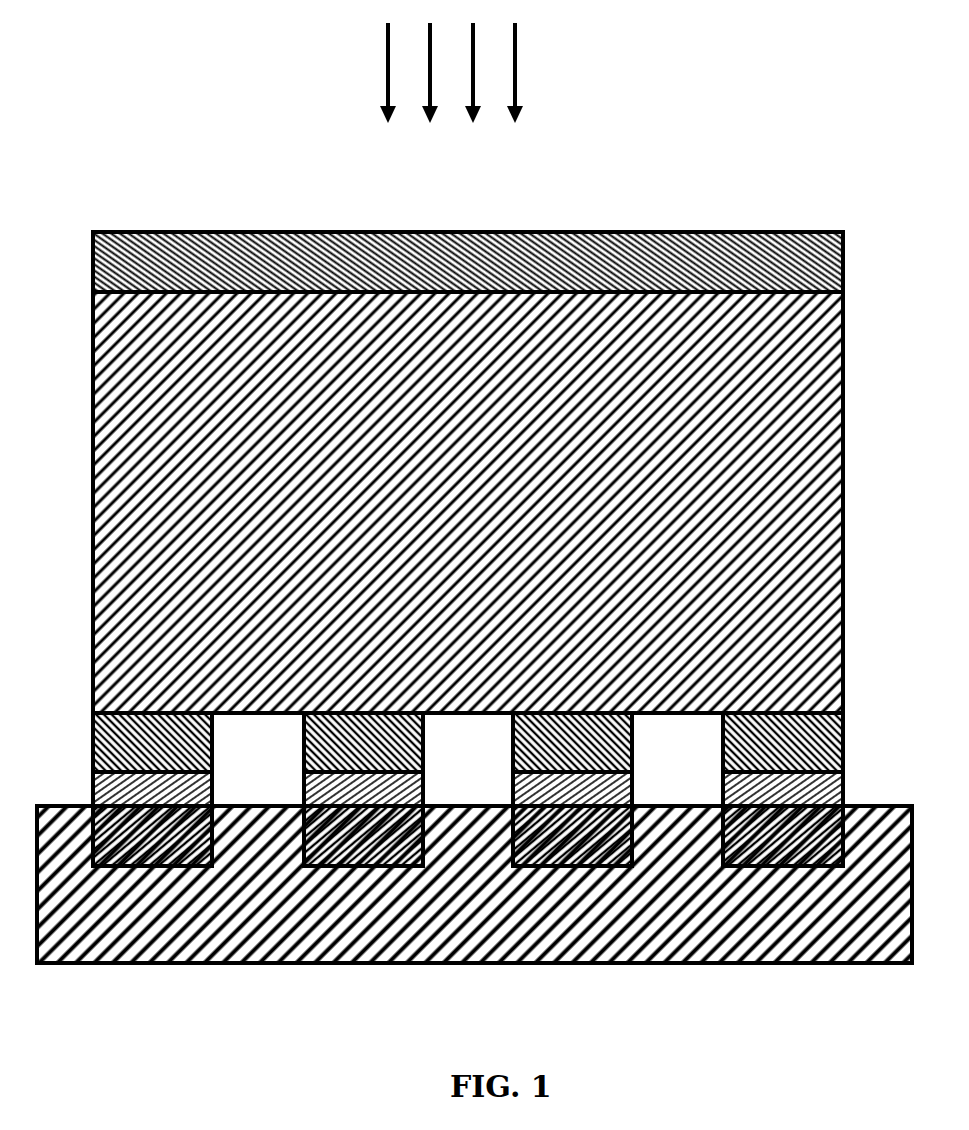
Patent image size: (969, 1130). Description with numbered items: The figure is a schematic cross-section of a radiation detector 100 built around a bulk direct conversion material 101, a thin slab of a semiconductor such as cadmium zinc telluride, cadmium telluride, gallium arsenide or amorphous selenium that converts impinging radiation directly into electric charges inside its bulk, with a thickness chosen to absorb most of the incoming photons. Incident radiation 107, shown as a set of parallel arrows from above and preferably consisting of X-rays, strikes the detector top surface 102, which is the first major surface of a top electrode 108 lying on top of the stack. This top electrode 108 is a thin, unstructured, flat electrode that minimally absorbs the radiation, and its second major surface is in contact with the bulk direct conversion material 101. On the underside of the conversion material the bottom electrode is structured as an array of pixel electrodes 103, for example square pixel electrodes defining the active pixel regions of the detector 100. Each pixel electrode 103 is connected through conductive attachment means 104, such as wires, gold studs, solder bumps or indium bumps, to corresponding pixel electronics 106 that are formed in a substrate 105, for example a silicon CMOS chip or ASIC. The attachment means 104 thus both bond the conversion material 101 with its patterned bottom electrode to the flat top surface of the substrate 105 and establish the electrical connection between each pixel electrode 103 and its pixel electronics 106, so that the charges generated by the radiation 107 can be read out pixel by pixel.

The detector 100 is at (726, 146).
The bulk direct conversion material 101 is at (845, 388).
The detector top surface 102 is at (502, 224).
The pixel electrodes 103 is at (216, 752).
The conductive attachment means 104 is at (425, 786).
The substrate 105 is at (422, 965).
The pixel electronics 106 is at (722, 866).
The incident radiation 107 is at (545, 52).
The top electrode 108 is at (845, 260).